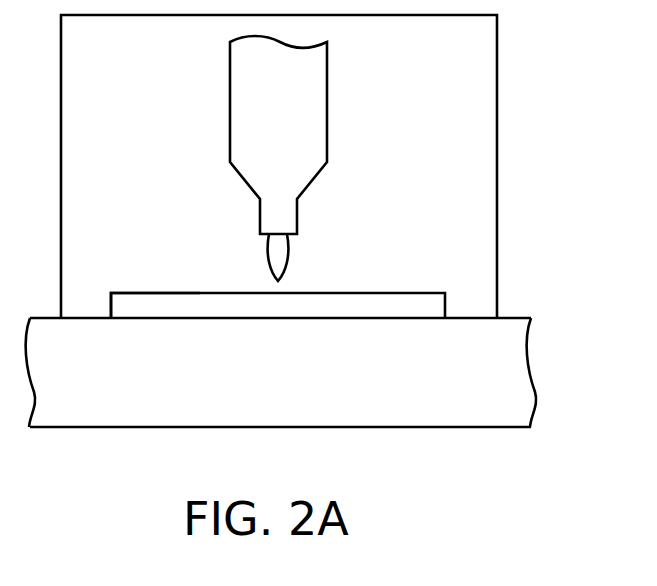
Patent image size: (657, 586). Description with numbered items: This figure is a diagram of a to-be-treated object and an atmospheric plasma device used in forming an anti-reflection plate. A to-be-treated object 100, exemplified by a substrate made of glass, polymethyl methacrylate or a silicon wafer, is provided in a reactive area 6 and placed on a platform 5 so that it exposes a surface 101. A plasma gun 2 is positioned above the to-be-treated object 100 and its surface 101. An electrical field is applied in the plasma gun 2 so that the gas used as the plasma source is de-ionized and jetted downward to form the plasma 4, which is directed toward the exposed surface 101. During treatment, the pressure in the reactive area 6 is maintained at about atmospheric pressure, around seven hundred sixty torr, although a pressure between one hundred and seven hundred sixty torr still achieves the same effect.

The plasma gun 2 is at (327, 99).
The plasma 4 is at (270, 244).
The reactive area 6 is at (300, 254).
The platform 5 is at (523, 369).
The to-be-treated object 100 is at (445, 297).
The surface 101 is at (133, 292).